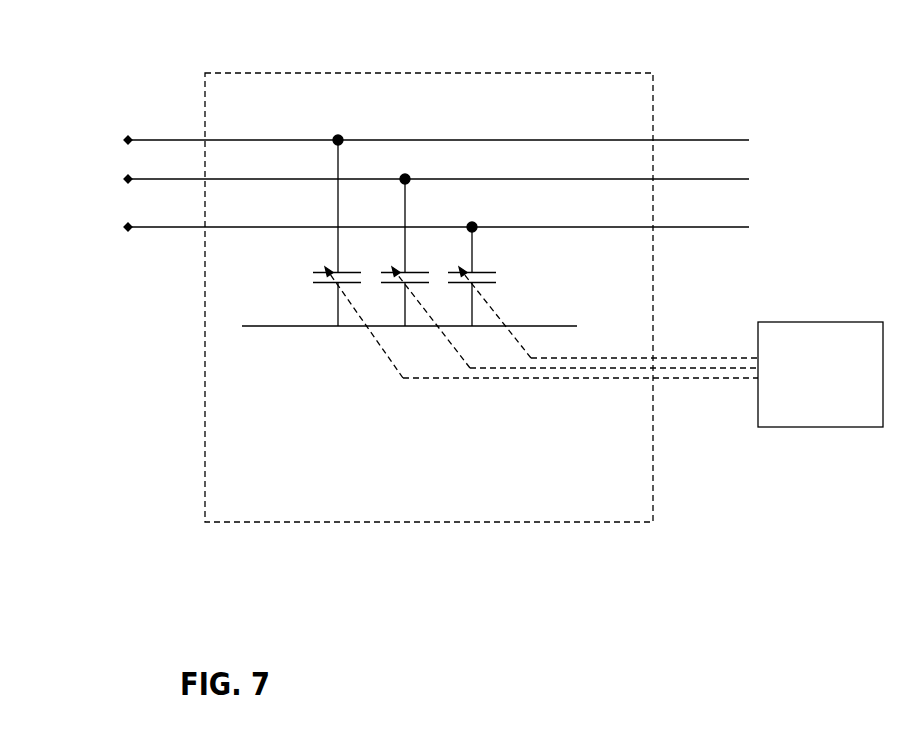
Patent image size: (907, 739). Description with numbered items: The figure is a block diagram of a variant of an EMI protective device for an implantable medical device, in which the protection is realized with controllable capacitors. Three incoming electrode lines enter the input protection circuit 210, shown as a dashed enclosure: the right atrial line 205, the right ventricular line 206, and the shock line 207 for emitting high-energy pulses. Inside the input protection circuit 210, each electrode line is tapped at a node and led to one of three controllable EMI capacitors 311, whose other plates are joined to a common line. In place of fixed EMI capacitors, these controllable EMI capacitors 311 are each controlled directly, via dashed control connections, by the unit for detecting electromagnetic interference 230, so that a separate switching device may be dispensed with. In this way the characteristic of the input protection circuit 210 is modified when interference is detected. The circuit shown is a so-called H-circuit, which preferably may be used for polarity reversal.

The right atrial electrode line 205 is at (408, 138).
The right ventricular electrode line 206 is at (408, 177).
The shock line 207 is at (408, 223).
The input protection circuit 210 is at (429, 273).
The controllable EMI capacitors 311 is at (500, 259).
The unit for detecting electromagnetic interference 230 is at (820, 374).